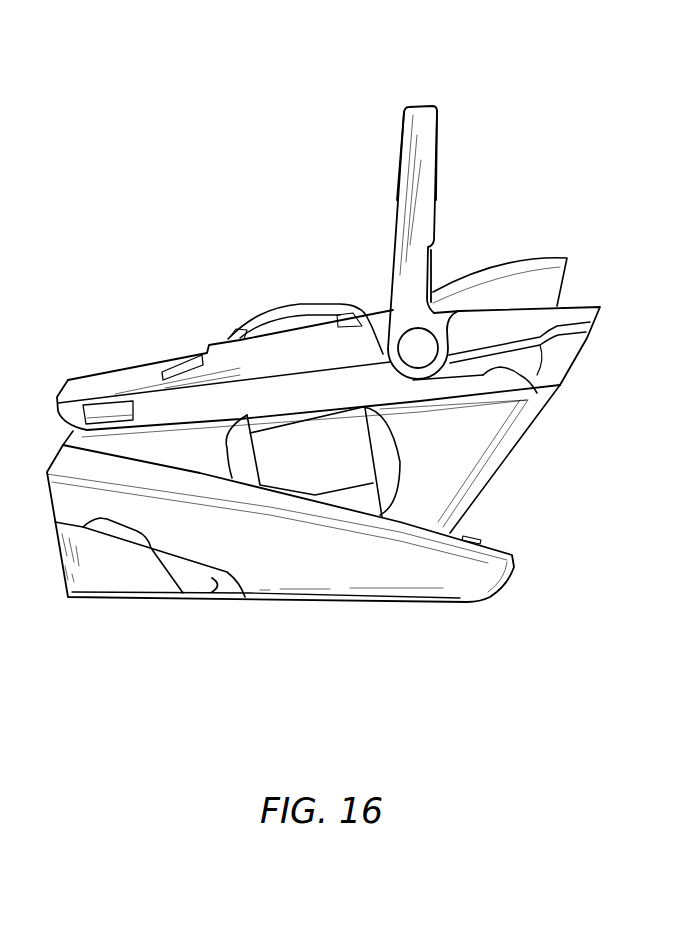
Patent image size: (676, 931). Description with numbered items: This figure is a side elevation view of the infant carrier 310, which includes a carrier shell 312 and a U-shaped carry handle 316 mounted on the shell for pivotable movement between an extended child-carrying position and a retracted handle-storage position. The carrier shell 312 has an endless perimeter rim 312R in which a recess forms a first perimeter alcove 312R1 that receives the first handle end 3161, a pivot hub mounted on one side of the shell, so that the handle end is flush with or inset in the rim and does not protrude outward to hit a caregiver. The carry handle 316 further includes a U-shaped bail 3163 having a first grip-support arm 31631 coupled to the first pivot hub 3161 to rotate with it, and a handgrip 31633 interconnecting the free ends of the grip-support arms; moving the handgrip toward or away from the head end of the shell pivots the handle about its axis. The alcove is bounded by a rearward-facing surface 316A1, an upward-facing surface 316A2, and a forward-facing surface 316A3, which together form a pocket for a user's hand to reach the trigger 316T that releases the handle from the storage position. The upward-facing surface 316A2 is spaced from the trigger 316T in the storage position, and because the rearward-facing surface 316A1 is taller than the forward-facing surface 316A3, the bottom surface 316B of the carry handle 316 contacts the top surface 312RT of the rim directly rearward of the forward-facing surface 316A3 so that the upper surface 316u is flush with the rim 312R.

The infant carrier 310 is at (549, 156).
The carrier shell 312 is at (484, 507).
The perimeter rim 312R is at (591, 300).
The top surface 312RT is at (552, 340).
The first perimeter alcove 312R1 is at (471, 371).
The carry handle 316 is at (459, 109).
The first handle end 3161 is at (414, 379).
The U-shaped bail 3163 is at (393, 132).
The first grip-support arm 31631 is at (316, 308).
The handgrip 31633 is at (423, 107).
The upper surface 316u is at (400, 163).
The bottom surface 316B is at (437, 164).
The trigger 316T is at (440, 258).
The rearward-facing surface 316A1 is at (414, 382).
The upward-facing surface 316A2 is at (519, 369).
The forward-facing surface 316A3 is at (558, 326).